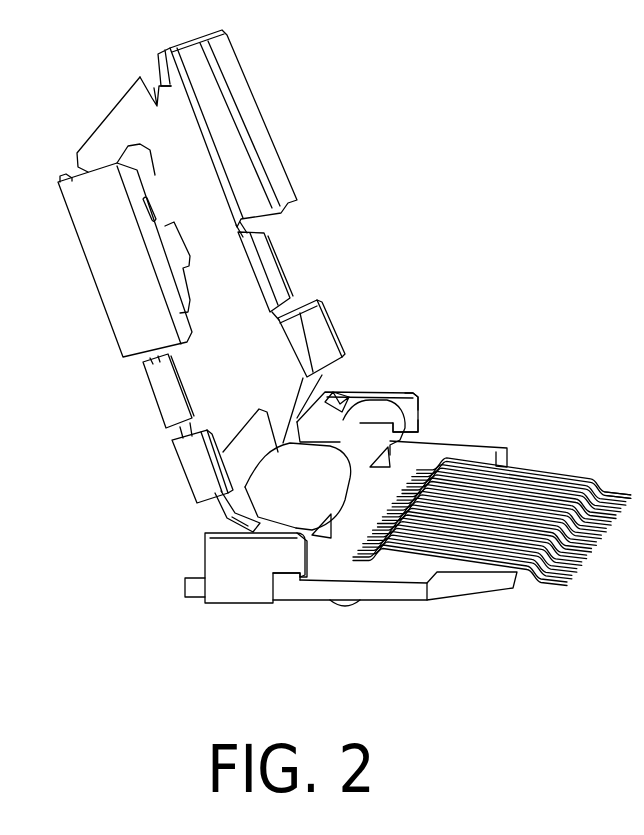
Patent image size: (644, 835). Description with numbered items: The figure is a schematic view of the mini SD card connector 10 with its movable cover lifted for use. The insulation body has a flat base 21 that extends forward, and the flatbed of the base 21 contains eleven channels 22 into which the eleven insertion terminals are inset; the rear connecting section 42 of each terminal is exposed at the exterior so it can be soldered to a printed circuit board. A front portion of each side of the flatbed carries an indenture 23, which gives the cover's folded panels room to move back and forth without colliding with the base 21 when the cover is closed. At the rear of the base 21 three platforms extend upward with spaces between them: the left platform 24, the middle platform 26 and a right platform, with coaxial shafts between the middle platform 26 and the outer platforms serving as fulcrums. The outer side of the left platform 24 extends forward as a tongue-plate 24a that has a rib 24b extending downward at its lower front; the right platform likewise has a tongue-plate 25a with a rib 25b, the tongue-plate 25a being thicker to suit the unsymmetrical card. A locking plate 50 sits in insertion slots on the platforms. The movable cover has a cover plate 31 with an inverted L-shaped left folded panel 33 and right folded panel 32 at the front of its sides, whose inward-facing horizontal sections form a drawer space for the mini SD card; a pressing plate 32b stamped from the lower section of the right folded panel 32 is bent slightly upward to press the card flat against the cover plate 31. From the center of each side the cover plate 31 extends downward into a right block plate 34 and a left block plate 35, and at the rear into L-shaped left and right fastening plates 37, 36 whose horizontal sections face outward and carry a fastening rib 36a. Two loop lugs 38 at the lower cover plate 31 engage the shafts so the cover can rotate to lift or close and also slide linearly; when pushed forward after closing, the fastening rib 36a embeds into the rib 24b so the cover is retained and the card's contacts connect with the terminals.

The mini SD card connector 10 is at (431, 194).
The base 21 is at (495, 450).
The channels 22 is at (573, 480).
The indenture 23 is at (443, 595).
The left platform 24 is at (365, 400).
The tongue-plate 24a is at (415, 392).
The rib 24b is at (418, 425).
The tongue-plate 25a is at (283, 555).
The rib 25b is at (287, 582).
The middle platform 26 is at (287, 447).
The cover plate 31 is at (117, 113).
The right folded panel 32 is at (135, 266).
The pressing plate 32b is at (151, 217).
The left folded panel 33 is at (260, 135).
The right block plate 34 is at (168, 390).
The left block plate 35 is at (280, 263).
The right fastening plate 36 is at (190, 463).
The fastening rib 36a is at (217, 503).
The left fastening plate 37 is at (328, 317).
The loop lugs 38 is at (350, 447).
The rear connecting section 42 is at (617, 487).
The locking plate 50 is at (340, 397).